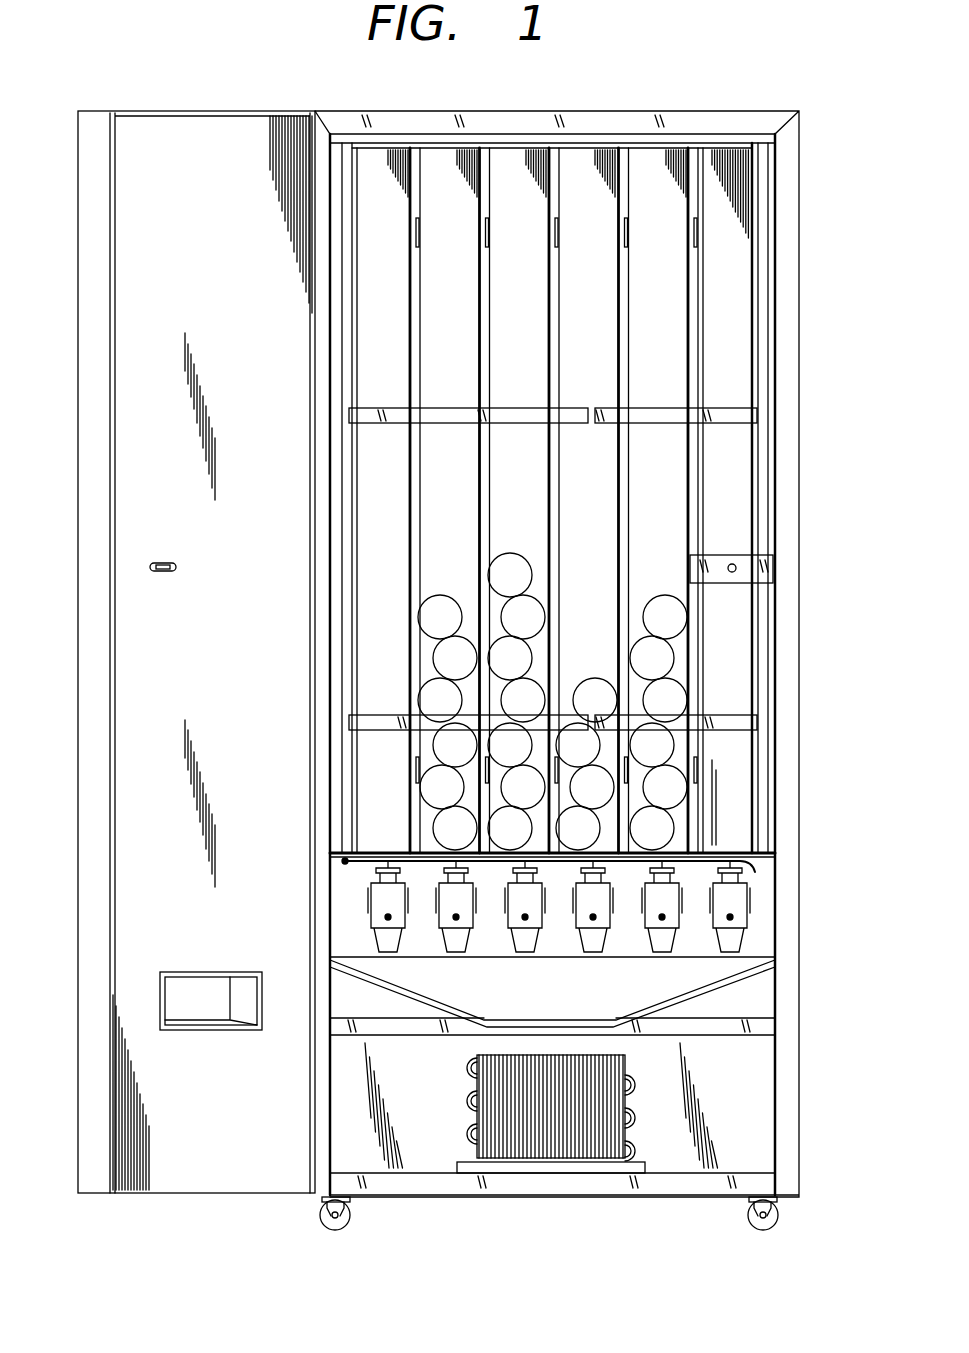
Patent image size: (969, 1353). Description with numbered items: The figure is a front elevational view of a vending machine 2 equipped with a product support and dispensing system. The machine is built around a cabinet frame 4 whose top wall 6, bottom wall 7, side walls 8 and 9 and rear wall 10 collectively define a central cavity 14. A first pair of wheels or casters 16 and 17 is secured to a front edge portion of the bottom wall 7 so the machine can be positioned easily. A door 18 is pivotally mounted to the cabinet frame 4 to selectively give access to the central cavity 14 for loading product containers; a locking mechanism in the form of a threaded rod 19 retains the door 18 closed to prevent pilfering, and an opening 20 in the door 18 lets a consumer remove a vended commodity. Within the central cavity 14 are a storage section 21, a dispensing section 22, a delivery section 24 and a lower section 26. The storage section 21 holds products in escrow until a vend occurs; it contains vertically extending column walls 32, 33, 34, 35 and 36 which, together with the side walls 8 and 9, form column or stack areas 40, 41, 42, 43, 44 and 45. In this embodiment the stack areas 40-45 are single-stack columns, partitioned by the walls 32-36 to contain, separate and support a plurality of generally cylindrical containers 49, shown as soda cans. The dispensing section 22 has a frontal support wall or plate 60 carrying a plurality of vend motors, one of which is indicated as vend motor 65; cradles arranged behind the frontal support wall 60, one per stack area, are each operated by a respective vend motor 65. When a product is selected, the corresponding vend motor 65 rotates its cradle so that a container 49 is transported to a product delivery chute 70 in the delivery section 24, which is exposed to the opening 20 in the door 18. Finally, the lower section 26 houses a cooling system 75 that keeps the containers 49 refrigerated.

The vending machine 2 is at (300, 78).
The cabinet frame 4 is at (810, 153).
The top wall 6 is at (563, 113).
The bottom wall 7 is at (678, 1168).
The side wall 8 is at (357, 174).
The side wall 9 is at (745, 247).
The rear wall 10 is at (716, 162).
The central cavity 14 is at (376, 371).
The caster 16 is at (355, 1212).
The caster 17 is at (752, 1212).
The door 18 is at (126, 1177).
The threaded rod 19 is at (158, 562).
The opening 20 is at (167, 995).
The storage section 21 is at (737, 512).
The dispensing section 22 is at (722, 840).
The delivery section 24 is at (674, 977).
The lower section 26 is at (764, 1080).
The column wall 32 is at (406, 196).
The column wall 33 is at (476, 196).
The column wall 34 is at (545, 196).
The column wall 35 is at (614, 196).
The column wall 36 is at (684, 196).
The stack area 40 is at (369, 312).
The stack area 41 is at (435, 312).
The stack area 42 is at (505, 312).
The stack area 43 is at (577, 312).
The stack area 44 is at (645, 312).
The stack area 45 is at (709, 312).
The cylindrical containers 49 is at (427, 614).
The frontal support wall 60 is at (763, 882).
The vend motor 65 is at (684, 938).
The product delivery chute 70 is at (652, 995).
The cooling system 75 is at (475, 1088).